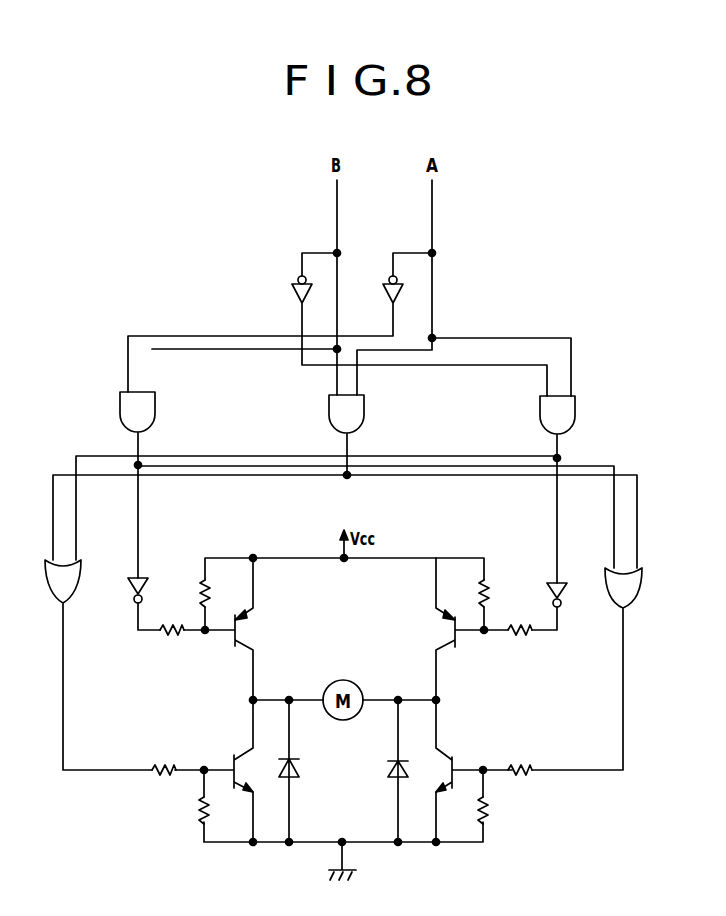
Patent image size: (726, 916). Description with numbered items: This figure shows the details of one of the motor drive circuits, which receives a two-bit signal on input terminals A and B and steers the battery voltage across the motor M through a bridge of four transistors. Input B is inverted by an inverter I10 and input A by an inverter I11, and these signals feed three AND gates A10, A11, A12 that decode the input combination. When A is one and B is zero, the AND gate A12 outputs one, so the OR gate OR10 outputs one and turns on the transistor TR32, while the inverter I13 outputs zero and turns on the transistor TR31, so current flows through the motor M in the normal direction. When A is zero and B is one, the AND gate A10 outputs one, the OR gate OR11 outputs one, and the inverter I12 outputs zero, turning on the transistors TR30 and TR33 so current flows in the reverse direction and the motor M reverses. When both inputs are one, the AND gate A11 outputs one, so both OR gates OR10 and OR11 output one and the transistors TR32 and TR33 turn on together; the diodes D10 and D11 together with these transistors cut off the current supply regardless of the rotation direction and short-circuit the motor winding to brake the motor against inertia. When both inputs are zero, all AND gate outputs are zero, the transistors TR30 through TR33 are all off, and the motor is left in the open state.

The inverter I10 is at (297, 291).
The inverter I11 is at (389, 291).
The AND gate A10 is at (155, 412).
The AND gate A11 is at (364, 413).
The AND gate A12 is at (575, 414).
The inverter I12 is at (146, 586).
The inverter I13 is at (563, 588).
The OR gate OR10 is at (80, 592).
The OR gate OR11 is at (608, 597).
The transistor TR30 is at (248, 636).
The transistor TR31 is at (444, 636).
The transistor TR32 is at (245, 754).
The transistor TR33 is at (455, 756).
The diode D10 is at (299, 781).
The diode D11 is at (388, 781).